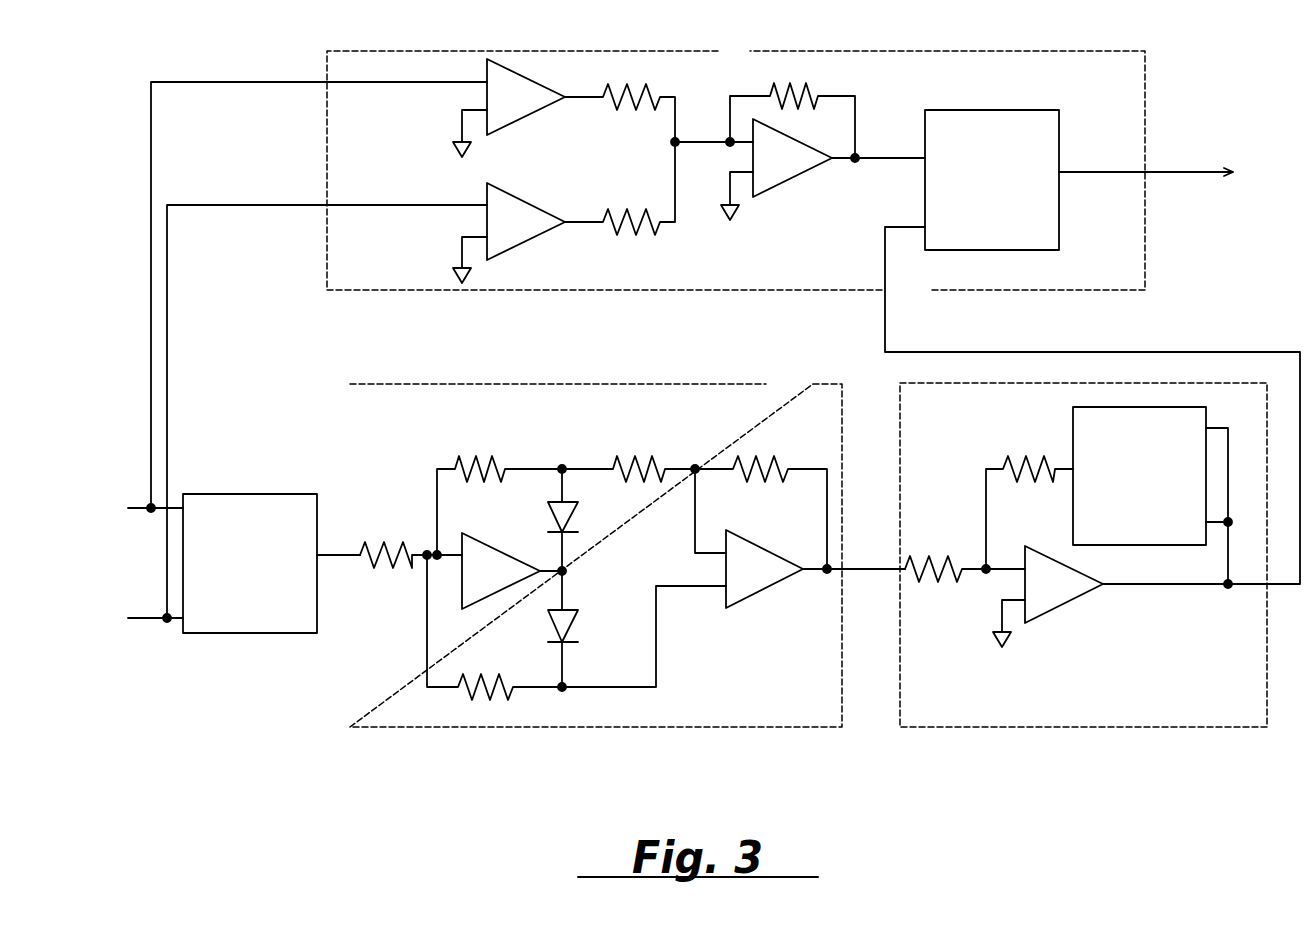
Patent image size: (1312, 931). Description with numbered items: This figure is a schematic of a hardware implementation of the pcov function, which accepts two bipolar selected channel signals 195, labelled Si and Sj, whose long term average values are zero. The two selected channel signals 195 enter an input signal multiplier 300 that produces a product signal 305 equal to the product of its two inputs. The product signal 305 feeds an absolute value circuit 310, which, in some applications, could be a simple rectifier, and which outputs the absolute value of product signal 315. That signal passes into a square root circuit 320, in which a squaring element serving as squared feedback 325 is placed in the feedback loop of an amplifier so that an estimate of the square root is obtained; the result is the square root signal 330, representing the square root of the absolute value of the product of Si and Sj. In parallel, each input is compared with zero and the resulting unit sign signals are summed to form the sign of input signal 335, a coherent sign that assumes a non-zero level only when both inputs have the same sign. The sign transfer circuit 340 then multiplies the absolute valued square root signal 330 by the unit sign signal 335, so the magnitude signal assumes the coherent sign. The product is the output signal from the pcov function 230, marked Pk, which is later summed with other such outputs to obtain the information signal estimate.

The selected channel signals 195 is at (105, 480).
The input signal multiplier 300 is at (262, 517).
The product signal 305 is at (333, 555).
The absolute value circuit 310 is at (711, 410).
The absolute value of product signal 315 is at (865, 571).
The square root circuit 320 is at (1083, 539).
The squared feedback 325 is at (1112, 515).
The square root signal 330 is at (1090, 349).
The sign of input signal 335 is at (902, 155).
The sign transfer circuit 340 is at (950, 72).
The output signal from the pcov function 230 is at (1265, 148).